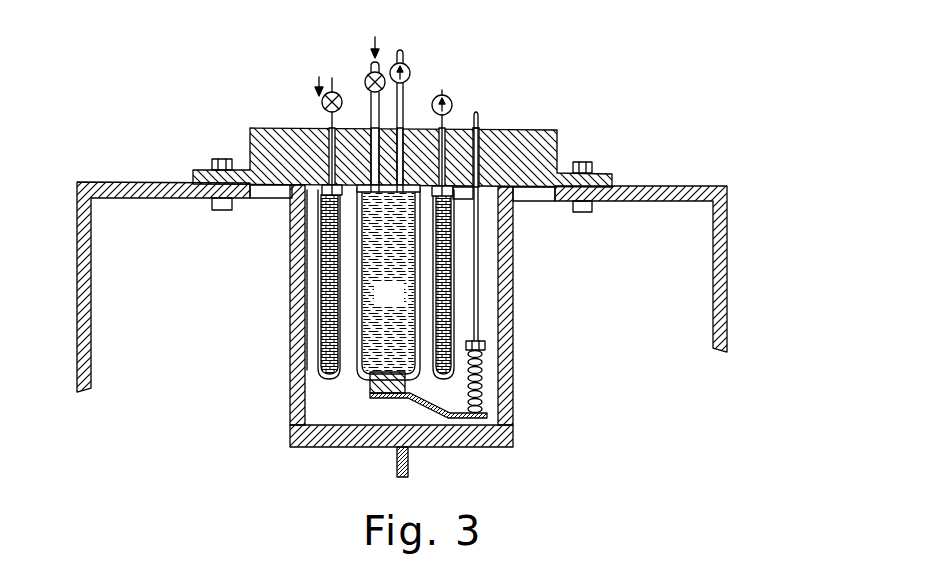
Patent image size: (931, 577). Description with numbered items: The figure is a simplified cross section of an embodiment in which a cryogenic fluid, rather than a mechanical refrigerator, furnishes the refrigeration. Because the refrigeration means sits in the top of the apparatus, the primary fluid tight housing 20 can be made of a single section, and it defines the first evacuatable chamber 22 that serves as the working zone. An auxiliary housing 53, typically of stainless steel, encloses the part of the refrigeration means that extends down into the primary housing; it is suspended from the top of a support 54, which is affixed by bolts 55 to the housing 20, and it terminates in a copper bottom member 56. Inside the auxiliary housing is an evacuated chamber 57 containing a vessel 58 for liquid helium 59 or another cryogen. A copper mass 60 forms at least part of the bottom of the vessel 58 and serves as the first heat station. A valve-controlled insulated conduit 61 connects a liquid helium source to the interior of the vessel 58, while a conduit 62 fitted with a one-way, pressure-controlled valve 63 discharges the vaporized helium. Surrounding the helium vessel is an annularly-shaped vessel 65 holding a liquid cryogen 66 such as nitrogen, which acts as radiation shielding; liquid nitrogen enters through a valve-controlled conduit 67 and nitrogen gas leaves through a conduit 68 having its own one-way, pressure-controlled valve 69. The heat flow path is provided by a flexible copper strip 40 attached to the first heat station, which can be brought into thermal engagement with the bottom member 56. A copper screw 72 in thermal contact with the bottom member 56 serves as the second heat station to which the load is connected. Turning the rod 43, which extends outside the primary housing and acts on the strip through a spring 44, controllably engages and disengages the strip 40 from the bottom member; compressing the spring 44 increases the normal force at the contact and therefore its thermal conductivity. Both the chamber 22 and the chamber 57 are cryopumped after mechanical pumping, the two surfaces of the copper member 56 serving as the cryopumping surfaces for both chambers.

The primary fluid tight housing 20 is at (67, 310).
The first evacuatable chamber 22 is at (180, 353).
The flexible copper strip 40 is at (460, 420).
The rod 43 is at (476, 333).
The spring 44 is at (483, 387).
The auxiliary housing 53 is at (513, 255).
The support 54 is at (550, 140).
The bolts 55 is at (592, 168).
The bottom member 56 is at (500, 440).
The evacuated chamber 57 is at (487, 297).
The vessel 58 is at (357, 305).
The liquid helium 59 is at (401, 303).
The copper mass 60 is at (373, 390).
The valve-controlled insulated conduit 61 is at (371, 115).
The conduit 62 is at (400, 99).
The one-way, pressure-controlled valve 63 is at (410, 70).
The annularly-shaped vessel 65 is at (322, 222).
The liquid cryogen 66 is at (320, 272).
The valve-controlled conduit 67 is at (330, 120).
The conduit 68 is at (478, 117).
The one-way, pressure-controlled valve 69 is at (447, 100).
The copper screw 72 is at (398, 470).